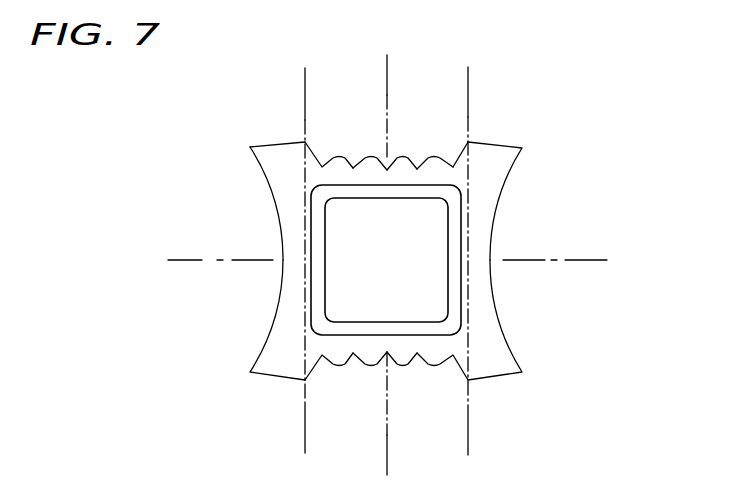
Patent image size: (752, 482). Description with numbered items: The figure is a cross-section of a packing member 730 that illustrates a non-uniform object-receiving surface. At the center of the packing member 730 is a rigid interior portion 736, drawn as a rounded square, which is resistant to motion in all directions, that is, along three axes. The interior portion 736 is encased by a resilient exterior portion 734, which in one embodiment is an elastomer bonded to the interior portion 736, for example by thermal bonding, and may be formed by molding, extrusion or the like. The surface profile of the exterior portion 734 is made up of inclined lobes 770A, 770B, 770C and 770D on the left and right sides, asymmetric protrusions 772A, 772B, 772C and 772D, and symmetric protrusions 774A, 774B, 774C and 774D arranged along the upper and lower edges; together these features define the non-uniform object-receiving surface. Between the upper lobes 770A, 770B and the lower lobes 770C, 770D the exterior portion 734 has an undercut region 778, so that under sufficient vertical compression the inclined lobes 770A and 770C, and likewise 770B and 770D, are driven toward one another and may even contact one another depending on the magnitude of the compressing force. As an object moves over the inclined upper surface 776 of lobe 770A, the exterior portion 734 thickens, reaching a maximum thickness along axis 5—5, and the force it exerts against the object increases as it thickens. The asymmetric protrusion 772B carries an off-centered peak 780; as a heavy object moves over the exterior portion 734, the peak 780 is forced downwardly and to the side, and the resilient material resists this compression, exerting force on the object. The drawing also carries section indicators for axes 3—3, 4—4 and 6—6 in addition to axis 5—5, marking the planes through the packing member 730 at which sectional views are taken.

The packing member 730 is at (580, 97).
The exterior portion 734 is at (285, 305).
The interior portion 736 is at (383, 194).
The inclined lobe 770A is at (268, 153).
The inclined lobe 770B is at (512, 159).
The inclined lobe 770C is at (268, 363).
The inclined lobe 770D is at (512, 358).
The asymmetric protrusion 772A is at (337, 153).
The asymmetric protrusion 772B is at (447, 163).
The asymmetric protrusion 772C is at (337, 362).
The asymmetric protrusion 772D is at (437, 362).
The symmetric protrusion 774A is at (370, 157).
The symmetric protrusion 774B is at (407, 157).
The symmetric protrusion 774C is at (363, 362).
The symmetric protrusion 774D is at (400, 362).
The inclined upper surface 776 is at (305, 141).
The undercut region 778 is at (223, 182).
The off-centered peak 780 is at (433, 157).
The section line 3- 3 is at (180, 259).
The section line 4- 4 is at (387, 72).
The axis 5— 5 is at (305, 73).
The section line 6- 6 is at (468, 75).